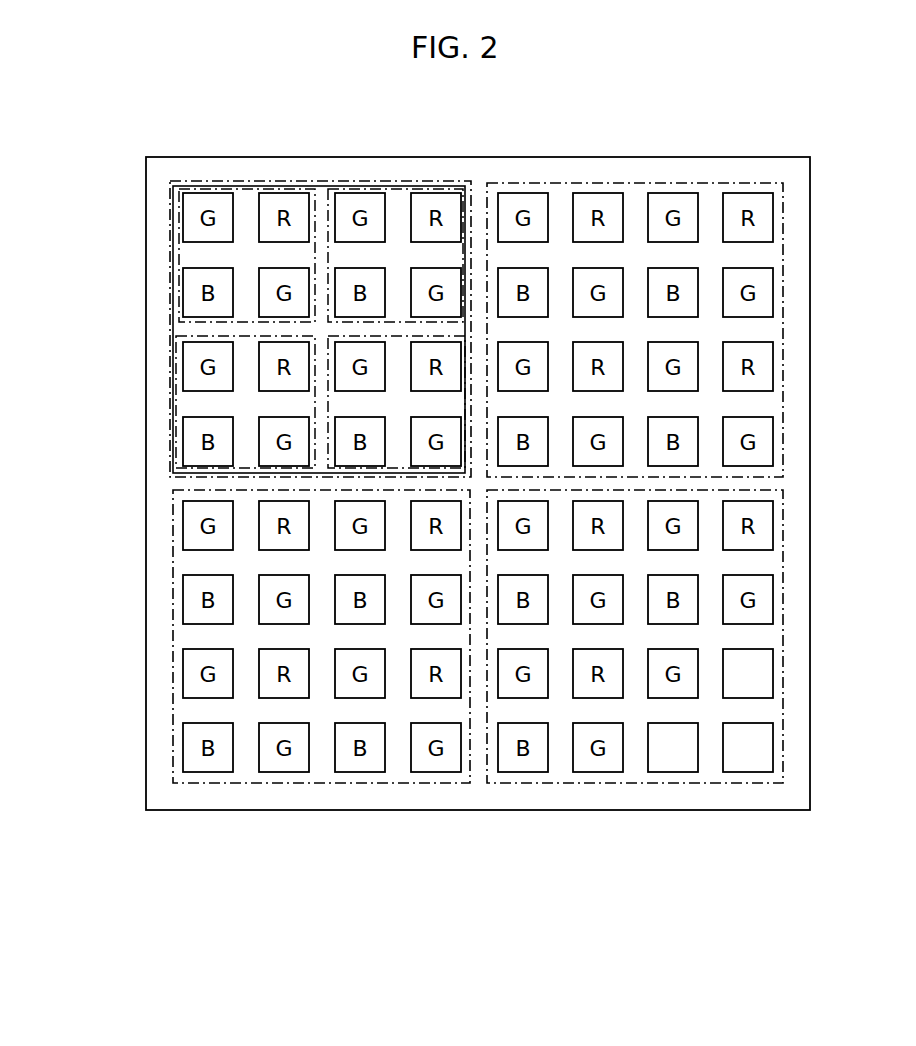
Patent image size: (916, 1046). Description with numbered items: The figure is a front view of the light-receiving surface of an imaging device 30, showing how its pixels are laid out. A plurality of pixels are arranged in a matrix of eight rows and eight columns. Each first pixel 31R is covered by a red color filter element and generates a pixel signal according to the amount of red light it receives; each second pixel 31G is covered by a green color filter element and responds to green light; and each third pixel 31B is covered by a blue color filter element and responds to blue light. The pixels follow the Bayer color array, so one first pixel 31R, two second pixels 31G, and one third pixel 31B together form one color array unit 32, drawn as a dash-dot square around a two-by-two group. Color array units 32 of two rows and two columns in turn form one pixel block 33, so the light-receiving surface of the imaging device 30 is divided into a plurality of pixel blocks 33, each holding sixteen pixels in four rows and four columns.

The imaging device 30 is at (478, 808).
The first pixel 31R is at (773, 670).
The second pixel 31G is at (748, 773).
The third pixel 31B is at (672, 773).
The color array unit 32 is at (379, 187).
The pixel block 33 is at (640, 182).